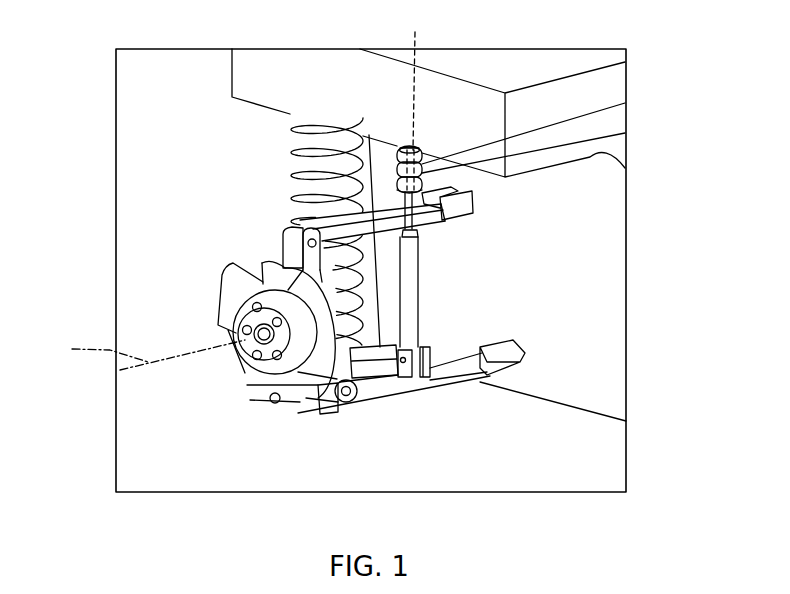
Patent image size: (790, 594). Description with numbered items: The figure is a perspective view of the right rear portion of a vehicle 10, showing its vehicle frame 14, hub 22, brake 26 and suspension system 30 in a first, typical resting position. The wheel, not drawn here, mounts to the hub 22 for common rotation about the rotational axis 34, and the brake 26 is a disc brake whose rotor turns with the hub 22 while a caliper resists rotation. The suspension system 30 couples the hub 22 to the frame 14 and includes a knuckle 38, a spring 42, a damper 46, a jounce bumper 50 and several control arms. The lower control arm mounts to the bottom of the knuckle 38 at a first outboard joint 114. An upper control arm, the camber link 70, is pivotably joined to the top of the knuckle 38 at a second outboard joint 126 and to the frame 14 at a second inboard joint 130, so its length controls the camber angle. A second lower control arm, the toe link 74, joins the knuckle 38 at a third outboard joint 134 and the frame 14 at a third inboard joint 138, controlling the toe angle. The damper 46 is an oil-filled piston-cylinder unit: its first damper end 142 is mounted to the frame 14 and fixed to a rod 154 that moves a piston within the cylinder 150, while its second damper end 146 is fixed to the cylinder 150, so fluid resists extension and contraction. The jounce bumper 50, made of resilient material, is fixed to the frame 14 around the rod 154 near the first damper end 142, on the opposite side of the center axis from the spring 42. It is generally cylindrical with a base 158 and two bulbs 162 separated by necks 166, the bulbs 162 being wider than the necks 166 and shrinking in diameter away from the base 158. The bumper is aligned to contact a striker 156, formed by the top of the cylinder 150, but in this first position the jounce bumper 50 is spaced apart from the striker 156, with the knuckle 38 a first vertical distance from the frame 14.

The vehicle 10 is at (167, 104).
The vehicle frame 14 is at (626, 72).
The hub 22 is at (245, 352).
The brake 26 is at (220, 318).
The suspension system 30 is at (270, 149).
The rotational axis 34 is at (142, 353).
The knuckle 38 is at (320, 404).
The spring 42 is at (297, 148).
The damper 46 is at (455, 250).
The jounce bumper 50 is at (399, 152).
The camber link 70 is at (302, 220).
The toe link 74 is at (397, 388).
The first outboard joint 114 is at (245, 393).
The second outboard joint 126 is at (283, 232).
The second inboard joint 130 is at (473, 197).
The third outboard joint 134 is at (331, 408).
The third inboard joint 138 is at (470, 380).
The first damper end 142 is at (412, 98).
The second damper end 146 is at (423, 387).
The cylinder 150 is at (410, 305).
The rod 154 is at (455, 213).
The striker 156 is at (418, 232).
The base 158 is at (418, 152).
The bulbs 162 is at (625, 103).
The necks 166 is at (358, 136).